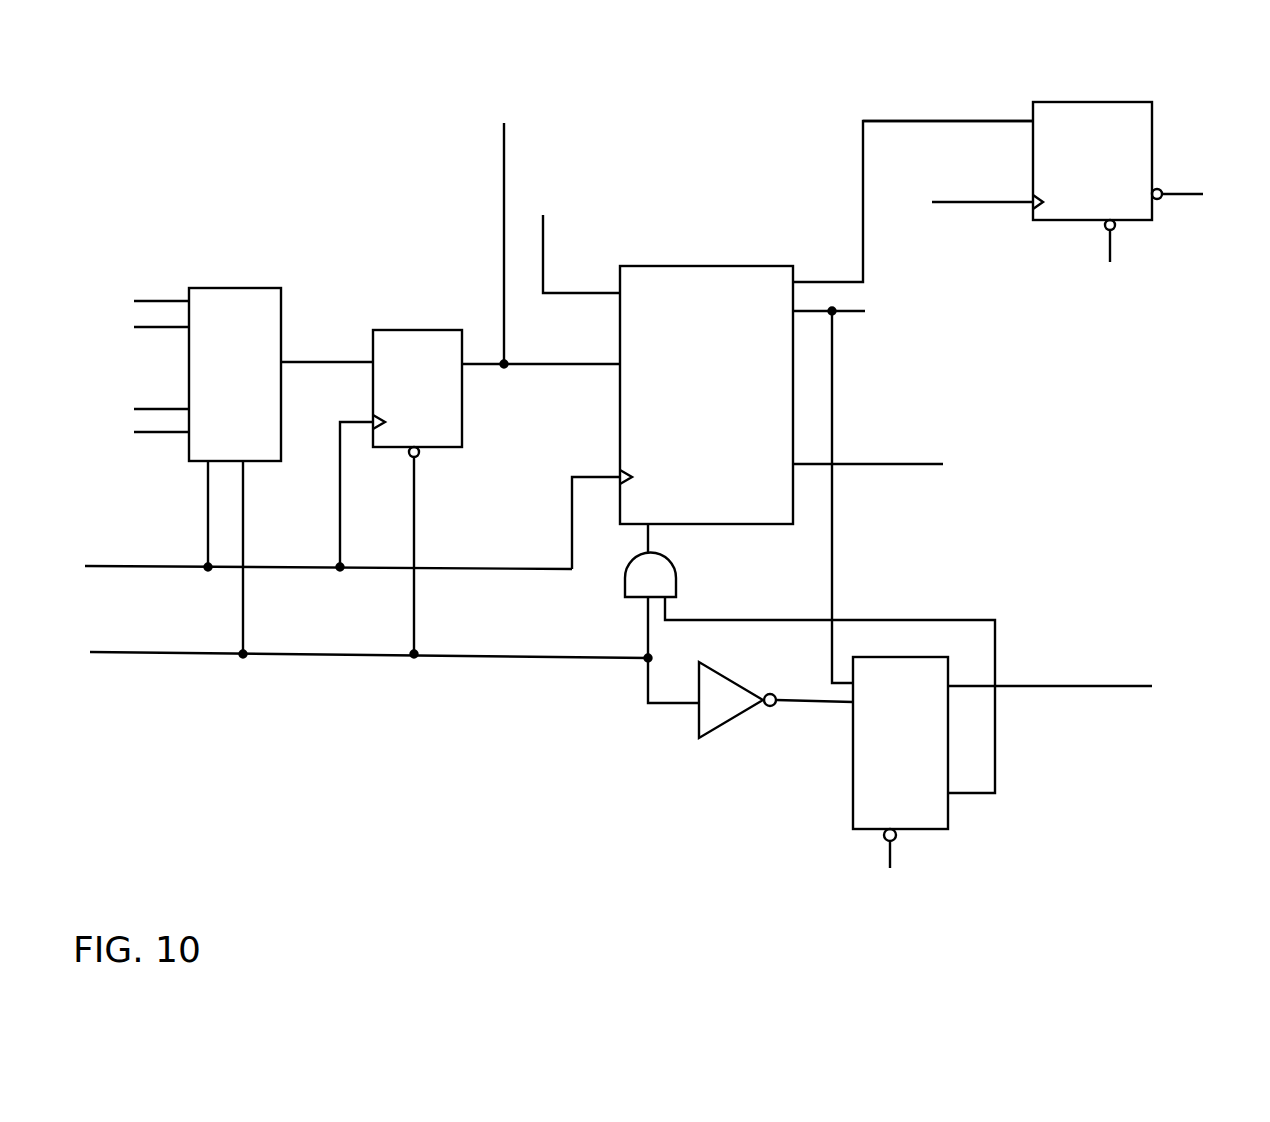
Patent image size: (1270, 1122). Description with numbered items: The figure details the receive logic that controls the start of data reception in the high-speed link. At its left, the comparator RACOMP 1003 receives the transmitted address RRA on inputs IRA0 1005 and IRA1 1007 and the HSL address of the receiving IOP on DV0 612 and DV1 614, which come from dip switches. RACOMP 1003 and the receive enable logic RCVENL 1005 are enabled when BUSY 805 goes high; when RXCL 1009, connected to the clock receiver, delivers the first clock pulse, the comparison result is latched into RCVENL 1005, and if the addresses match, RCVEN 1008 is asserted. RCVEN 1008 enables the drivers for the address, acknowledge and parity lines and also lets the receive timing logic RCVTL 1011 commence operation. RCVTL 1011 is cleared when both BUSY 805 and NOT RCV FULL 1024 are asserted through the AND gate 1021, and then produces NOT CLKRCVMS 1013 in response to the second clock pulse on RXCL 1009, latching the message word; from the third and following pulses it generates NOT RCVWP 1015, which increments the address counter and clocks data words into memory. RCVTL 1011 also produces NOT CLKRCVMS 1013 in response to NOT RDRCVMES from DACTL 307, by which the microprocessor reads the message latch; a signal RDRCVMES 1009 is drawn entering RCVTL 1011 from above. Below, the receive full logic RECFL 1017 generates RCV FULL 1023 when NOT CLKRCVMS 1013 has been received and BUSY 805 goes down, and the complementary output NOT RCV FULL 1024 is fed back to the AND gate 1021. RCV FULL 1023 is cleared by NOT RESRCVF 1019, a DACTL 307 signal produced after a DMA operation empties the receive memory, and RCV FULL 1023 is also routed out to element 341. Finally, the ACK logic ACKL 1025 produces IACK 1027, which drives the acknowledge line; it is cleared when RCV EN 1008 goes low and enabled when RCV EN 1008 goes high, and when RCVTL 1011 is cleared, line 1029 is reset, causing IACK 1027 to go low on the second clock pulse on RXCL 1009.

The DV0 612 is at (157, 278).
The DV1 614 is at (156, 354).
The receive enable logic (RCVENL) 1005 is at (260, 494).
The IRA1 1007 is at (125, 446).
The RACOMP 1003 is at (281, 473).
The RCVEN 1008 is at (798, 245).
The RXCL 1009 is at (539, 387).
The DACTL 307 is at (708, 568).
The receive timing logic (RCVTL) 1011 is at (802, 345).
The NOT CLKRCVMS 1013 is at (965, 322).
The NOT RCVWP 1015 is at (940, 477).
The AND gate 1021 is at (676, 576).
The BUSY 805 is at (355, 663).
The receive full logic (RECFL) 1017 is at (900, 749).
The NOT RESRCVF 1019 is at (955, 877).
The RCV FULL 1023 is at (1050, 715).
The NOT RCV FULL 1024 is at (1067, 802).
The ACK logic (ACKL) 1025 is at (1092, 161).
The IACK 1027 is at (1204, 216).
The line 1029 is at (948, 135).
The reference to element 341 is at (1194, 687).